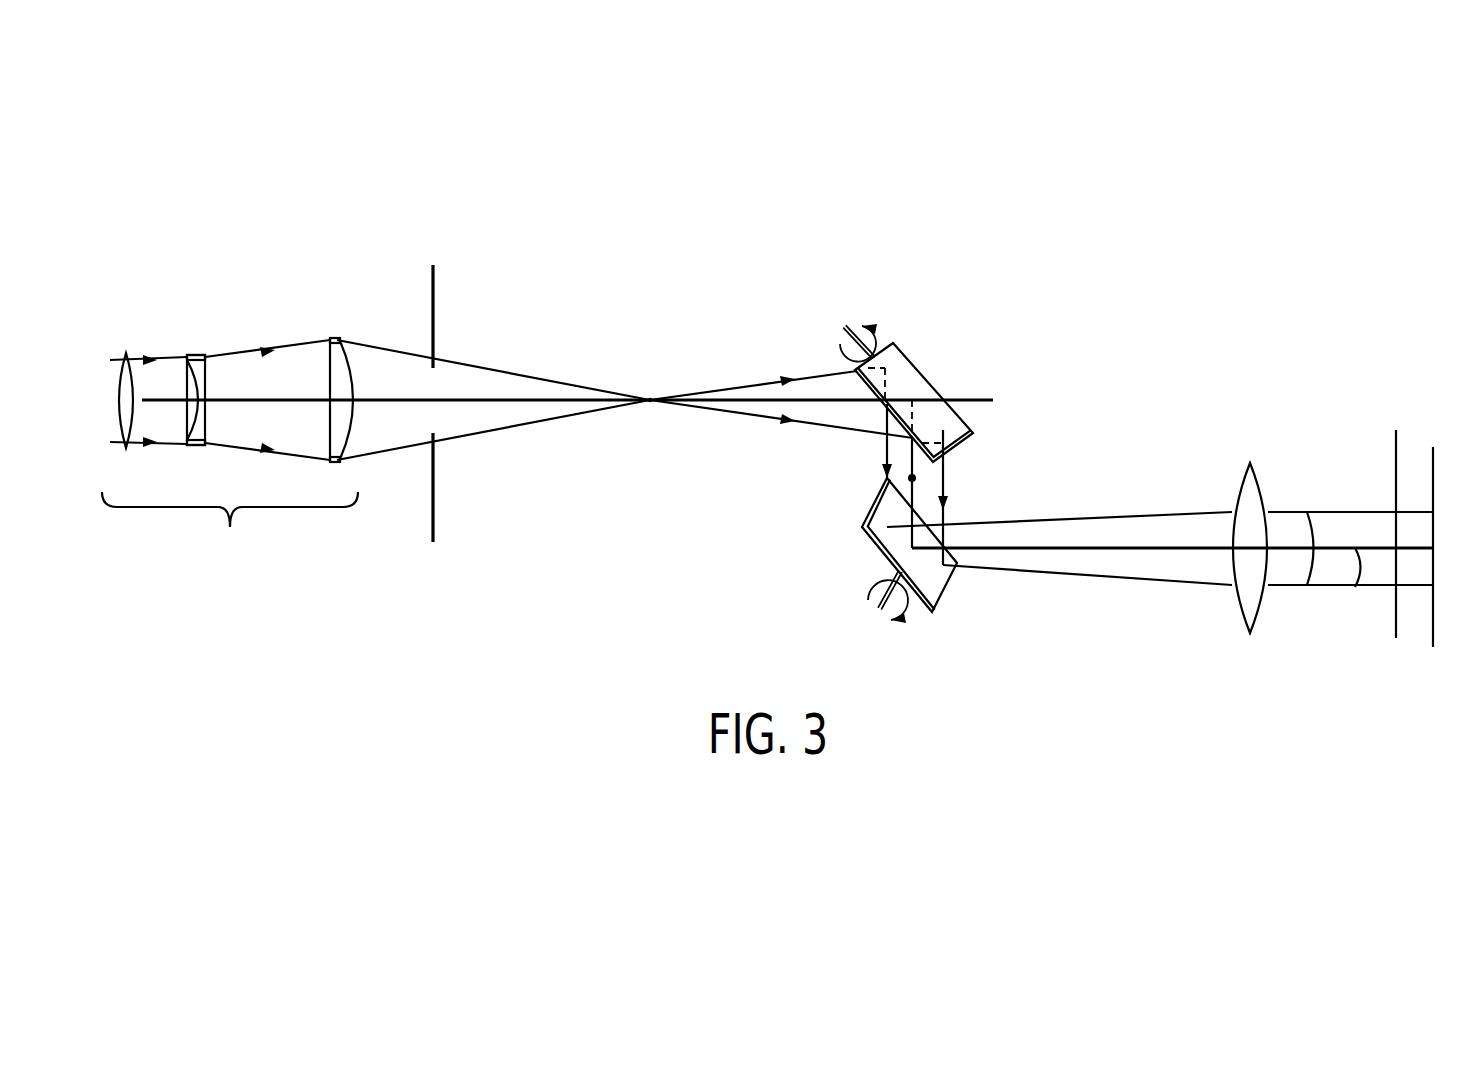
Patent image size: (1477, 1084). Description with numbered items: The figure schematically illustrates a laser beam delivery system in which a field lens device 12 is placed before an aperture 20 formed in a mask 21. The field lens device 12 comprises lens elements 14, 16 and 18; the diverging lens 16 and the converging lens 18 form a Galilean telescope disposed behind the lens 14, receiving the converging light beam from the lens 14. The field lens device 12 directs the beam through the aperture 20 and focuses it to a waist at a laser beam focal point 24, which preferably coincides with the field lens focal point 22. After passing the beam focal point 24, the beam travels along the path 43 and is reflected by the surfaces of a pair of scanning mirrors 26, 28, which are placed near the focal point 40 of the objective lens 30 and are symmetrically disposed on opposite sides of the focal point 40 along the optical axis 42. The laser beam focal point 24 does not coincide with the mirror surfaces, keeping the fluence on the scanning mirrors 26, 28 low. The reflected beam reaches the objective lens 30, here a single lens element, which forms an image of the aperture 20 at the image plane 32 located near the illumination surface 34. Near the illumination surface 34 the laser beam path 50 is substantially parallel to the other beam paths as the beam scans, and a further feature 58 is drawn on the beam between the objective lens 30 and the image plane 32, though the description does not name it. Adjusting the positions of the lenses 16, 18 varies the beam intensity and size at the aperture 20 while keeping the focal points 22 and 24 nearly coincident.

The field lens device 12 is at (230, 527).
The lens element 14 is at (119, 354).
The diverging lens 16 is at (197, 353).
The converging lens 18 is at (335, 338).
The aperture 20 is at (432, 382).
The mask 21 is at (437, 277).
The beam path 43 is at (487, 385).
The field lens focal point 22 is at (648, 408).
The laser beam focal point 24 is at (652, 393).
The scanning mirror 26 is at (930, 378).
The optical axis 42 is at (883, 445).
The objective lens focal point 40 is at (920, 478).
The scanning mirror 28 is at (947, 590).
The objective lens 30 is at (1240, 485).
The wavefront 58 is at (1318, 527).
The laser beam path 50 is at (1360, 582).
The image plane 32 is at (1393, 438).
The illumination surface 34 is at (1433, 637).